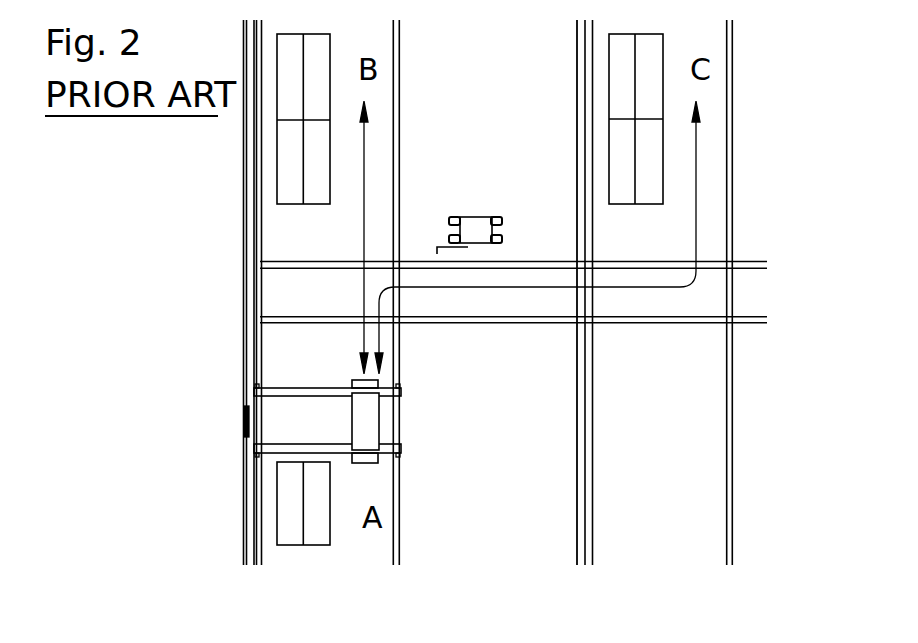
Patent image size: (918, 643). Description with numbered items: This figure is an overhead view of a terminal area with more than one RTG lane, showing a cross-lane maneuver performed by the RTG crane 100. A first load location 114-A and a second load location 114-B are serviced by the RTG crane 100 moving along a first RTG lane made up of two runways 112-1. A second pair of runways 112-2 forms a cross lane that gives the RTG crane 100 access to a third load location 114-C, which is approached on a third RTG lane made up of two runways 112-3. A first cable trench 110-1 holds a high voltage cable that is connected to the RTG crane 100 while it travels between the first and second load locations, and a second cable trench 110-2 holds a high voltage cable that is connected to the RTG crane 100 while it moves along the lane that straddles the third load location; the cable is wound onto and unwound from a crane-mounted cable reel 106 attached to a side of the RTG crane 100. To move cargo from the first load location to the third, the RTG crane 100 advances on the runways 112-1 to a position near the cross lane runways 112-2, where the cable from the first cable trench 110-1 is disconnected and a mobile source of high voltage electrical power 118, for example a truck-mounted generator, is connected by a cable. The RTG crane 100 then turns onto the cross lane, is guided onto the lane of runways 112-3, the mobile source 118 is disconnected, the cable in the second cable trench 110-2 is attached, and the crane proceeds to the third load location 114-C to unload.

The RTG crane 100 is at (401, 443).
The crane-mounted cable reel 106 is at (244, 410).
The first cable trench 110-1 is at (247, 505).
The second cable trench 110-2 is at (575, 462).
The runways 112-1 is at (256, 363).
The cross lane runways 112-2 is at (767, 260).
The runways 112-3 is at (593, 502).
The first load location A 114-A is at (303, 545).
The second load location B 114-B is at (340, 18).
The third load location C 114-C is at (672, 18).
The mobile source of high voltage electrical power 118 is at (476, 216).